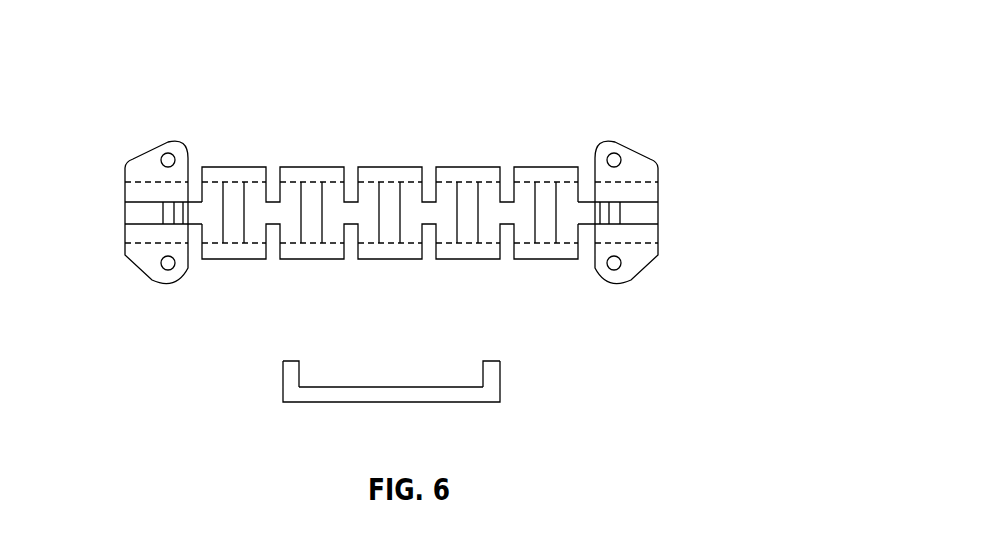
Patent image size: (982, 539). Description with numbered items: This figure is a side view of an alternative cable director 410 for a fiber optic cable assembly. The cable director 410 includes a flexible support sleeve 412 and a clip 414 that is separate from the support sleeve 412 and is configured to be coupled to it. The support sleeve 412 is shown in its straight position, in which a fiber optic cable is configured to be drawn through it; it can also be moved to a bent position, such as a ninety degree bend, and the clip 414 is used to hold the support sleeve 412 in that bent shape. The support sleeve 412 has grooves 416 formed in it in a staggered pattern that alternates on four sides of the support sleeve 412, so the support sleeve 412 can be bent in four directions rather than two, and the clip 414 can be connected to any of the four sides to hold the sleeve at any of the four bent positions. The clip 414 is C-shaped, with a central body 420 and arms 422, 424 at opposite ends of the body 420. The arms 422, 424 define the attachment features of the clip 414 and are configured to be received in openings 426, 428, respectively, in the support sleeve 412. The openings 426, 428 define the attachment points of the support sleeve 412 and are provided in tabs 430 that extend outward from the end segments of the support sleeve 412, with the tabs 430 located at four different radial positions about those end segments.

The cable director 410 is at (562, 52).
The flexible support sleeve 412 is at (537, 166).
The clip 414 is at (392, 396).
The grooves 416 is at (428, 164).
The central body 420 is at (333, 403).
The arm 422 is at (294, 376).
The arm 424 is at (493, 375).
The opening 426 is at (175, 151).
The opening 428 is at (620, 155).
The tabs 430 is at (155, 153).